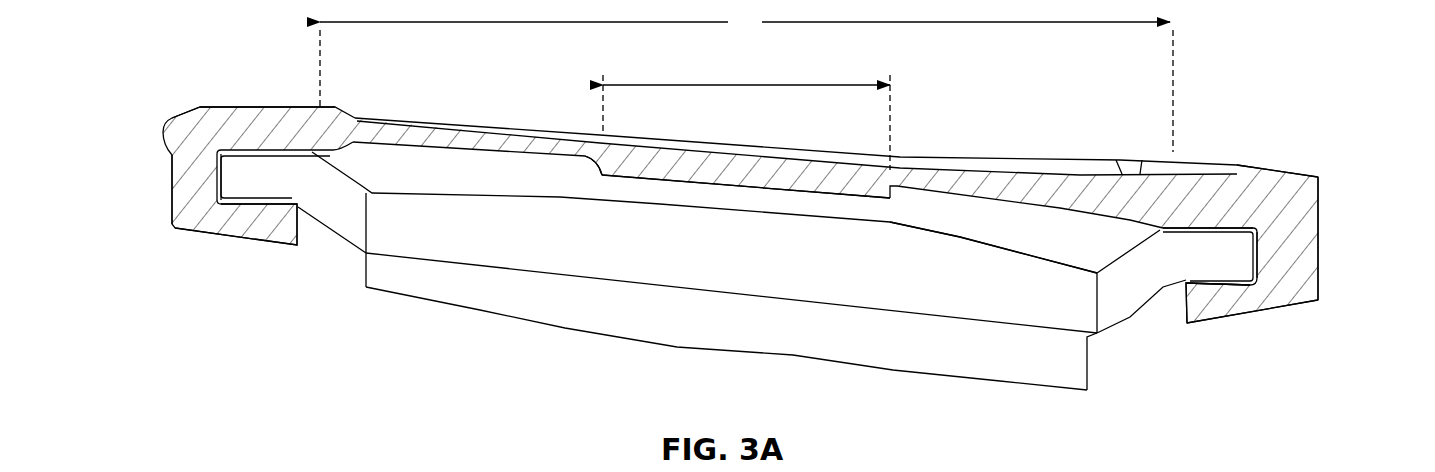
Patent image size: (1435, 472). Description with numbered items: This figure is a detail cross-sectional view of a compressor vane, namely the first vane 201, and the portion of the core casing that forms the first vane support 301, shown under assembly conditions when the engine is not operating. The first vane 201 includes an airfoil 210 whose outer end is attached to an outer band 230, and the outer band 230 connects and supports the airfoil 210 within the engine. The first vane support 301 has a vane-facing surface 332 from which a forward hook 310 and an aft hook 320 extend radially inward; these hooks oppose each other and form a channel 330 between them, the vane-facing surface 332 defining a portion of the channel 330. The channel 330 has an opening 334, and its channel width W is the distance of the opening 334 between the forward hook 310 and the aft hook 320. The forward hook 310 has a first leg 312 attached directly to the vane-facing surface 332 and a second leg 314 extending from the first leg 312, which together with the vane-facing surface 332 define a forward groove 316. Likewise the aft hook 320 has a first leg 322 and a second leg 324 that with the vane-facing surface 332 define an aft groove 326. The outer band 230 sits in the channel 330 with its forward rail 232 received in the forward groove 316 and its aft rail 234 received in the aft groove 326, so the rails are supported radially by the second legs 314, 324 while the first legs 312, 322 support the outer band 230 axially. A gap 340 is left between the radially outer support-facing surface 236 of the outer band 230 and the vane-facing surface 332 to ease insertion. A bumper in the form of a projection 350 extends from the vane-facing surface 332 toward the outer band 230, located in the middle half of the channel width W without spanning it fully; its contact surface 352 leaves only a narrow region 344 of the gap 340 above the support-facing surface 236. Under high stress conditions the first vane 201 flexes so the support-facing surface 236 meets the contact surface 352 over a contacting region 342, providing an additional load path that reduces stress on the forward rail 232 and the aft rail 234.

The first vane 201 is at (1050, 364).
The airfoil 210 is at (443, 287).
The outer band 230 is at (570, 274).
The forward rail 232 is at (264, 186).
The aft rail 234 is at (1209, 257).
The support-facing surface 236 is at (963, 235).
The first vane support 301 is at (1070, 185).
The forward hook 310 is at (137, 227).
The first leg 312 is at (196, 180).
The second leg 314 is at (280, 232).
The forward groove 316 is at (247, 168).
The aft hook 320 is at (1329, 273).
The first leg 322 is at (1290, 237).
The second leg 324 is at (1192, 308).
The aft groove 326 is at (1233, 262).
The channel 330 is at (467, 172).
The vane-facing surface 332 is at (1006, 208).
The opening 334 is at (813, 276).
The gap 340 is at (598, 182).
The contacting region 342 is at (750, 85).
The narrow region 344 is at (892, 209).
The projection 350 is at (795, 180).
The contact surface 352 is at (708, 192).
The channel width W is at (746, 79).